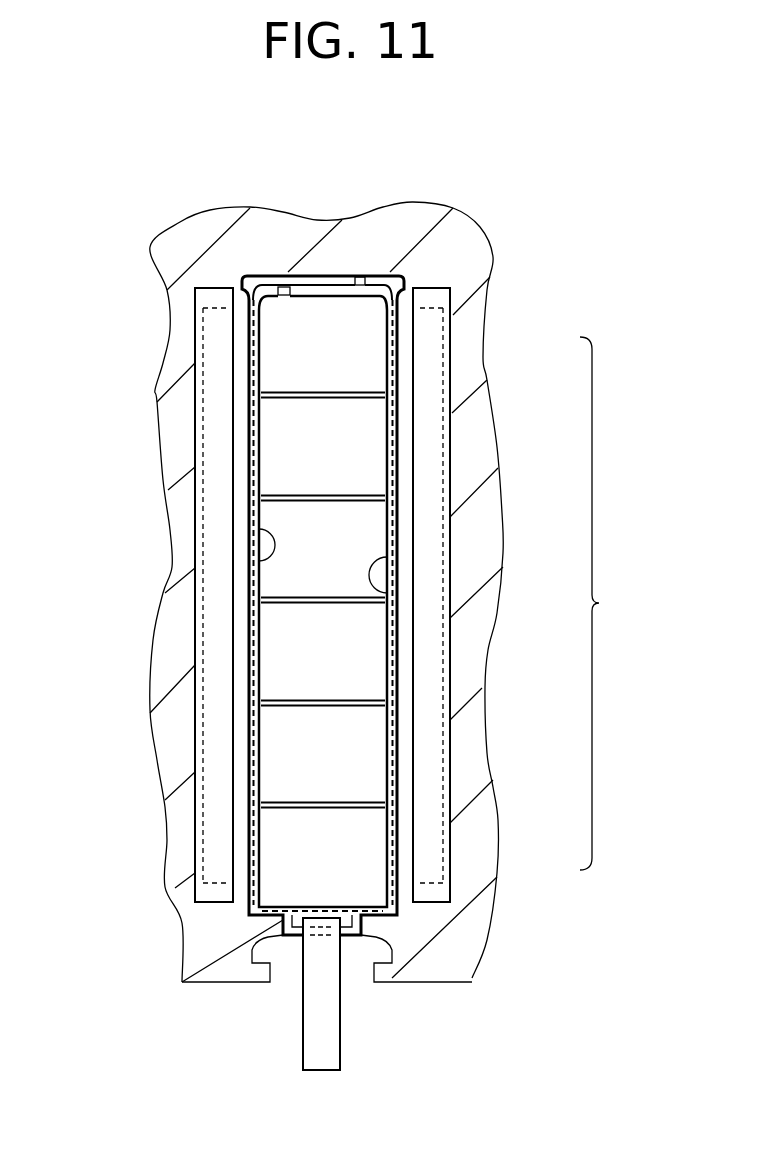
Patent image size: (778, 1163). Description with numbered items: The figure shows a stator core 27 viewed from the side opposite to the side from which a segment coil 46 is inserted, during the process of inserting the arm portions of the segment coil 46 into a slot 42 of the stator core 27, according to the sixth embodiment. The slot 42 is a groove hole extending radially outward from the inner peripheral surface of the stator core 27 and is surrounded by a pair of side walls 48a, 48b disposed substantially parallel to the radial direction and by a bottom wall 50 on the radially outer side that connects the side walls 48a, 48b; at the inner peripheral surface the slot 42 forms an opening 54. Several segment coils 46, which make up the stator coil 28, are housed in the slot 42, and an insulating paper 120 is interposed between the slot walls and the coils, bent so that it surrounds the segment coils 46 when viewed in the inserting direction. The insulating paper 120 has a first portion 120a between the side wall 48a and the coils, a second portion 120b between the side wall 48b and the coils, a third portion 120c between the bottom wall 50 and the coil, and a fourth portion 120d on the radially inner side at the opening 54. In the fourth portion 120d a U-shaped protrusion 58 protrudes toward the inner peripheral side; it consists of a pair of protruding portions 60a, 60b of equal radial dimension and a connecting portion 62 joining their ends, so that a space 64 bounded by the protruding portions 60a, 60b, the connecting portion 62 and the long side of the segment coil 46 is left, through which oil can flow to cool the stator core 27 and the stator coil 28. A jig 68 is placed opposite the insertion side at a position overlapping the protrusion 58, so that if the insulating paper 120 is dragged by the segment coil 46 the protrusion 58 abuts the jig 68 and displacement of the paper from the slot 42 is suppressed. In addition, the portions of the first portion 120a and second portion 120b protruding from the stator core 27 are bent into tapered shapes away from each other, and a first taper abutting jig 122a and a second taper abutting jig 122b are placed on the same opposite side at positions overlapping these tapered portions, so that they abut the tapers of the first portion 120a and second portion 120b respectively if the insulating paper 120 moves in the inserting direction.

The stator core 27 is at (195, 248).
The stator coil 28 is at (608, 603).
The slot 42 is at (232, 611).
The segment coil 46 is at (357, 353).
The side wall 48a is at (252, 530).
The side wall 48b is at (385, 592).
The bottom wall 50 is at (363, 295).
The opening 54 is at (351, 988).
The protrusion 58 is at (296, 946).
The protruding portion 60a is at (283, 922).
The protruding portion 60b is at (373, 927).
The connecting portion 62 is at (350, 937).
The space 64 is at (295, 899).
The jig 68 is at (330, 1047).
The insulating paper 120 is at (276, 254).
The first portion 120a is at (240, 763).
The second portion 120b is at (408, 802).
The third portion 120c is at (280, 293).
The fourth portion 120d is at (285, 905).
The first taper abutting jig 122a is at (217, 663).
The second taper abutting jig 122b is at (428, 698).